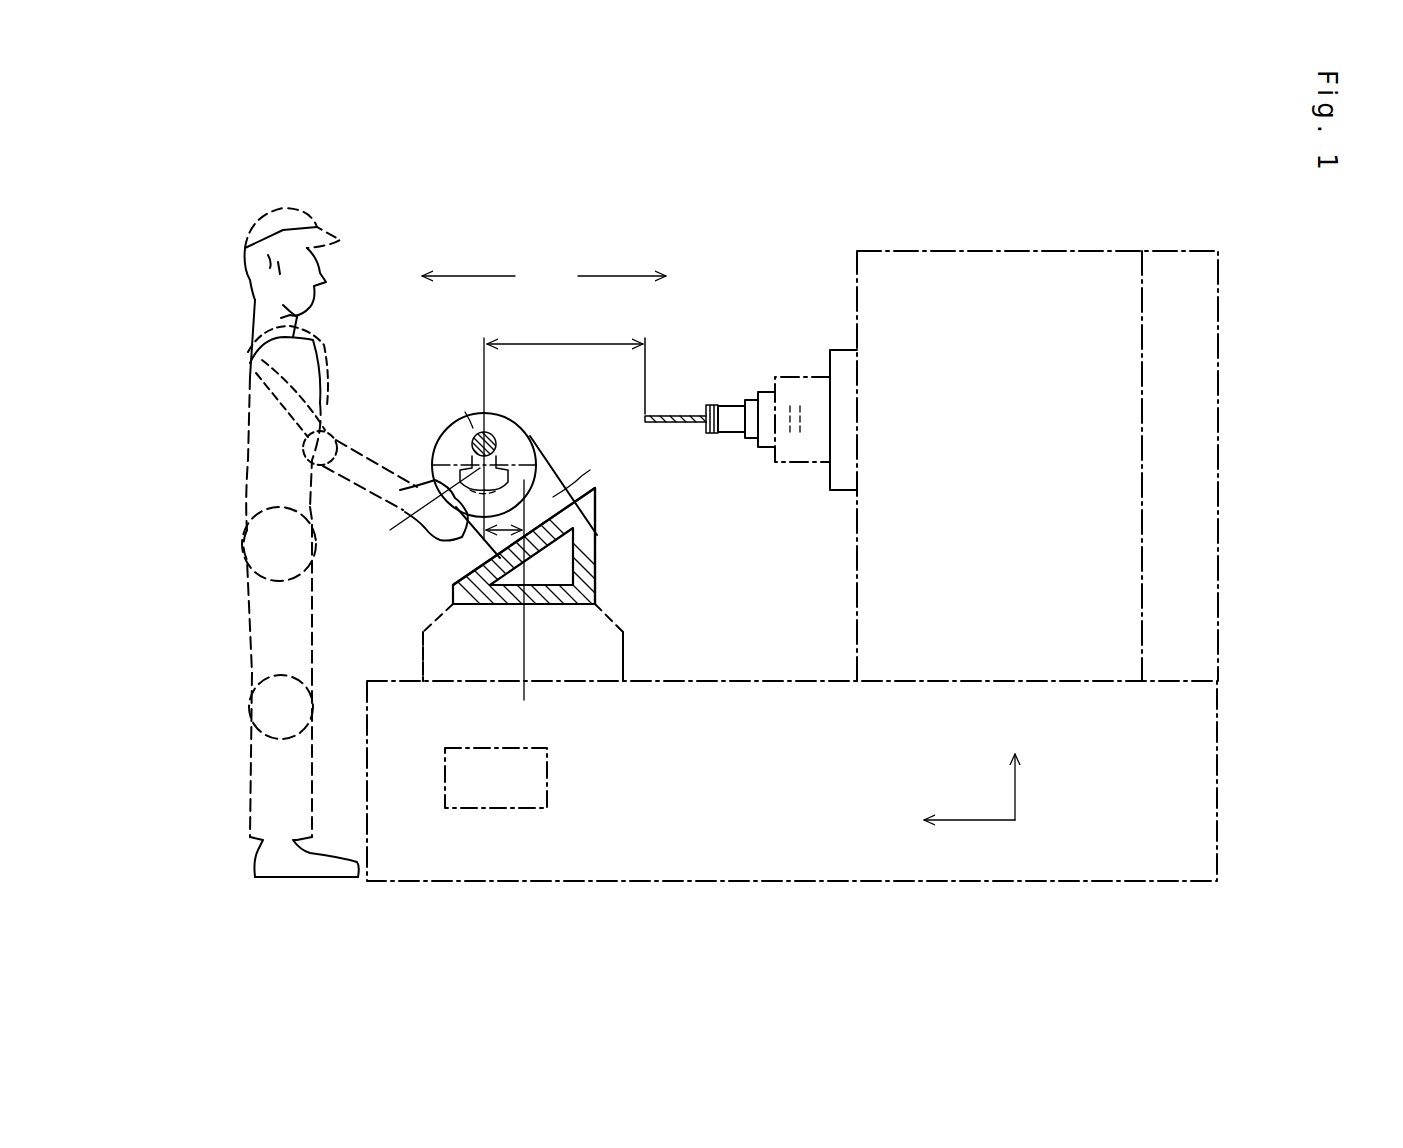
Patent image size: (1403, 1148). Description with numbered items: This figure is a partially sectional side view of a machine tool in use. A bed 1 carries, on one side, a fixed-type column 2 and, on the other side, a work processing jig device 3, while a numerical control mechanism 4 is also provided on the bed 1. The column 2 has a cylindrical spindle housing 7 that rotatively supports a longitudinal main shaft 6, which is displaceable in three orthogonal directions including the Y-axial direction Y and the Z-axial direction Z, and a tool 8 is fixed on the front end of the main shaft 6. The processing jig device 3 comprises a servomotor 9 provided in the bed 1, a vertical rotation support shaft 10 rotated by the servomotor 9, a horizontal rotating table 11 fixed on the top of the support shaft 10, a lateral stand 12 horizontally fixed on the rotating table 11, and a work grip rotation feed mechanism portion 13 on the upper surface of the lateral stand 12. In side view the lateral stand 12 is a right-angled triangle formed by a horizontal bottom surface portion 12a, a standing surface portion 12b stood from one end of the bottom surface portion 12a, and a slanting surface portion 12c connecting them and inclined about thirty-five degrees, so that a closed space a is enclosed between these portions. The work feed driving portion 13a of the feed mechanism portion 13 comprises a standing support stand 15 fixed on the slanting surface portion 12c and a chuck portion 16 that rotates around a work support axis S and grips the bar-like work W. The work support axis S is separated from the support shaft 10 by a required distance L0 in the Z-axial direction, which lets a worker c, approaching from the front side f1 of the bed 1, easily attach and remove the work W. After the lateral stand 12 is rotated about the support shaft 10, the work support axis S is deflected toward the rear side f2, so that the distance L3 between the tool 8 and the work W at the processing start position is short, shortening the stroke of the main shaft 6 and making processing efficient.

The bed 1 is at (1058, 858).
The fixed-type column 2 is at (970, 268).
The work processing jig device 3 is at (392, 641).
The numerical control mechanism 4 is at (1169, 266).
The main shaft 6 is at (762, 396).
The cylindrical spindle housing 7 is at (805, 386).
The tool 8 is at (672, 413).
The servomotor 9 is at (547, 783).
The vertical rotation support shaft 10 is at (525, 662).
The horizontal rotating table 11 is at (622, 634).
The lateral stand 12 is at (600, 532).
The horizontal bottom surface portion 12a is at (492, 606).
The standing surface portion 12b is at (592, 583).
The slanting surface portion 12c is at (470, 565).
The work grip rotation feed mechanism portion 13 is at (565, 432).
The work feed driving portion 13a is at (505, 432).
The standing support stand 15 is at (466, 412).
The chuck portion 16 is at (584, 471).
The bar-like work W is at (452, 460).
The work support axis S is at (422, 508).
The closed space a is at (548, 573).
The worker c is at (316, 352).
The distance L0 is at (596, 500).
The distance L3 is at (559, 344).
The front side f1 is at (450, 277).
The rear side f2 is at (643, 277).
The Y-axial direction Y is at (1013, 768).
The Z-axial direction Z is at (952, 823).